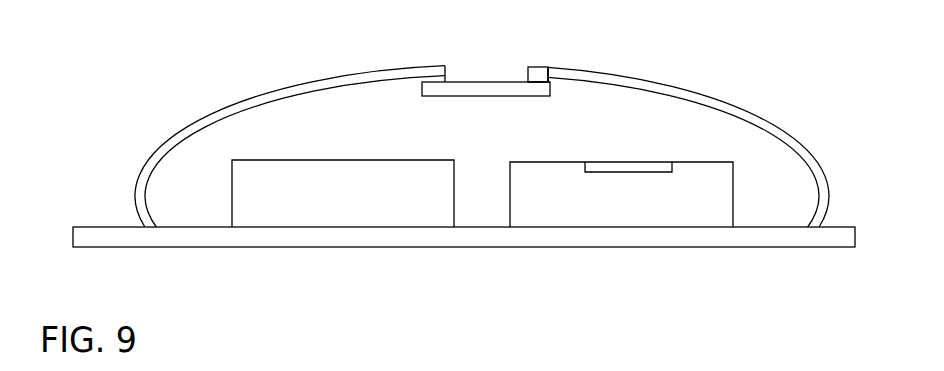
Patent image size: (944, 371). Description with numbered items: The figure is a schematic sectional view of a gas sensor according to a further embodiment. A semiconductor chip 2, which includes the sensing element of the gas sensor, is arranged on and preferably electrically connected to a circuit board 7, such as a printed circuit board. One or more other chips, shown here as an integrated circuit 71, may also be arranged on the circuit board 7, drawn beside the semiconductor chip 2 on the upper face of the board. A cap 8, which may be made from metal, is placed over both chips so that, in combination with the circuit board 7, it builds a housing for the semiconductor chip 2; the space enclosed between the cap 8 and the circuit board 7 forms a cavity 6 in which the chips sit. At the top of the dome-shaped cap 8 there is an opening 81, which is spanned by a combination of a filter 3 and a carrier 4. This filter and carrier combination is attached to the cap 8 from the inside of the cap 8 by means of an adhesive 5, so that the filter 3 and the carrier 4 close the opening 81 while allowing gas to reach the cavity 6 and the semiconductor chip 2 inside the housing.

The semiconductor chip 2 is at (692, 202).
The filter 3 is at (553, 79).
The carrier 4 is at (553, 92).
The adhesive 5 is at (541, 80).
The cavity 6 is at (323, 137).
The circuit board 7 is at (488, 245).
The integrated circuit 71 is at (383, 196).
The cap 8 is at (182, 128).
The opening 81 is at (460, 60).